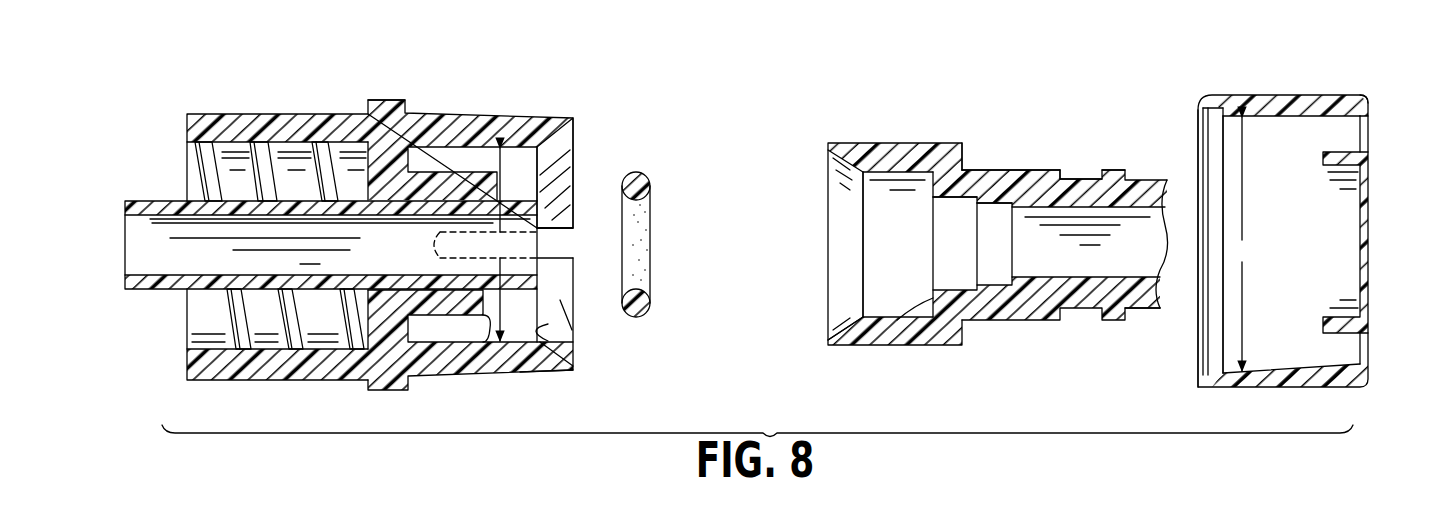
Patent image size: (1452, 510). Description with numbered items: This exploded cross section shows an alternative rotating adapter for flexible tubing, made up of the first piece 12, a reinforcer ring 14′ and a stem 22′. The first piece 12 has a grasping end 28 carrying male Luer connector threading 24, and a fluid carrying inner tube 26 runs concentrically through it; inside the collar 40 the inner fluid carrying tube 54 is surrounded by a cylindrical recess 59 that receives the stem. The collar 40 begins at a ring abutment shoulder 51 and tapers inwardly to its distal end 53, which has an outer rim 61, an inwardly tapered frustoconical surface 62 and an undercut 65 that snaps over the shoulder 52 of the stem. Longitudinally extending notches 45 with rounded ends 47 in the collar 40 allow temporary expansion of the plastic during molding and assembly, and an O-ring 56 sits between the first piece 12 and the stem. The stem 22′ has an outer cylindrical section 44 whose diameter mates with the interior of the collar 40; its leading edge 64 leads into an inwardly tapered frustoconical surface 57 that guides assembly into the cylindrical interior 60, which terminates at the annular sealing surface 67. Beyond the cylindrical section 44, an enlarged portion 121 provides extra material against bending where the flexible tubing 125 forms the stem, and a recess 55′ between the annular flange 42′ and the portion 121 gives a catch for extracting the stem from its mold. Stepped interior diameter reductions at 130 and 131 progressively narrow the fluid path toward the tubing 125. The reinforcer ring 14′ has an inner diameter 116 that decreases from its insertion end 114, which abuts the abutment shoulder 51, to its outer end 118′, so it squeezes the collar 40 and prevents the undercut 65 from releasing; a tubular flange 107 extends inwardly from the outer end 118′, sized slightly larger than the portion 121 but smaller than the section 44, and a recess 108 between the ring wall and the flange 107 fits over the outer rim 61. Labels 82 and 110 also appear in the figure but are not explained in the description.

The first piece 12 is at (292, 113).
The reinforcer ring 14′ is at (1281, 97).
The stem 22′ is at (1032, 330).
The Luer connector threading 24 is at (232, 330).
The fluid carrying inner tube 26 is at (150, 201).
The grasping end 28 is at (216, 111).
The collar 40 is at (518, 117).
The annular flange 42′ is at (1118, 170).
The outer cylindrical section 44 is at (898, 155).
The longitudinally extending notch 45 is at (548, 245).
The rounded end 47 is at (432, 245).
The ring abutment shoulder 51 is at (405, 100).
The shoulder 52 is at (965, 150).
The distal end 53 is at (546, 386).
The inner fluid carrying tube 54 is at (560, 208).
The recess 55′ is at (1078, 176).
The O-ring 56 is at (648, 184).
The frustoconical surface 57 is at (830, 163).
The cylindrical recess 59 is at (440, 333).
The cylindrical interior 60 is at (846, 283).
The outer rim 61 is at (572, 356).
The frustoconical surface 62 is at (555, 340).
The leading edge 64 is at (830, 340).
The undercut 65 is at (548, 324).
The annular sealing surface 67 is at (930, 306).
The diameter 82 is at (503, 244).
The tubular flange 107 is at (1322, 165).
The recess 108 is at (1346, 139).
The cavity 110 is at (1290, 226).
The insertion end 114 is at (1199, 105).
The inner diameter 116 is at (1240, 244).
The outer end 118′ is at (1362, 95).
The enlarged portion 121 is at (1005, 170).
The flexible tubing 125 is at (1150, 312).
The stepped interior diameter reduction 130 is at (972, 205).
The stepped interior diameter reduction 131 is at (980, 230).